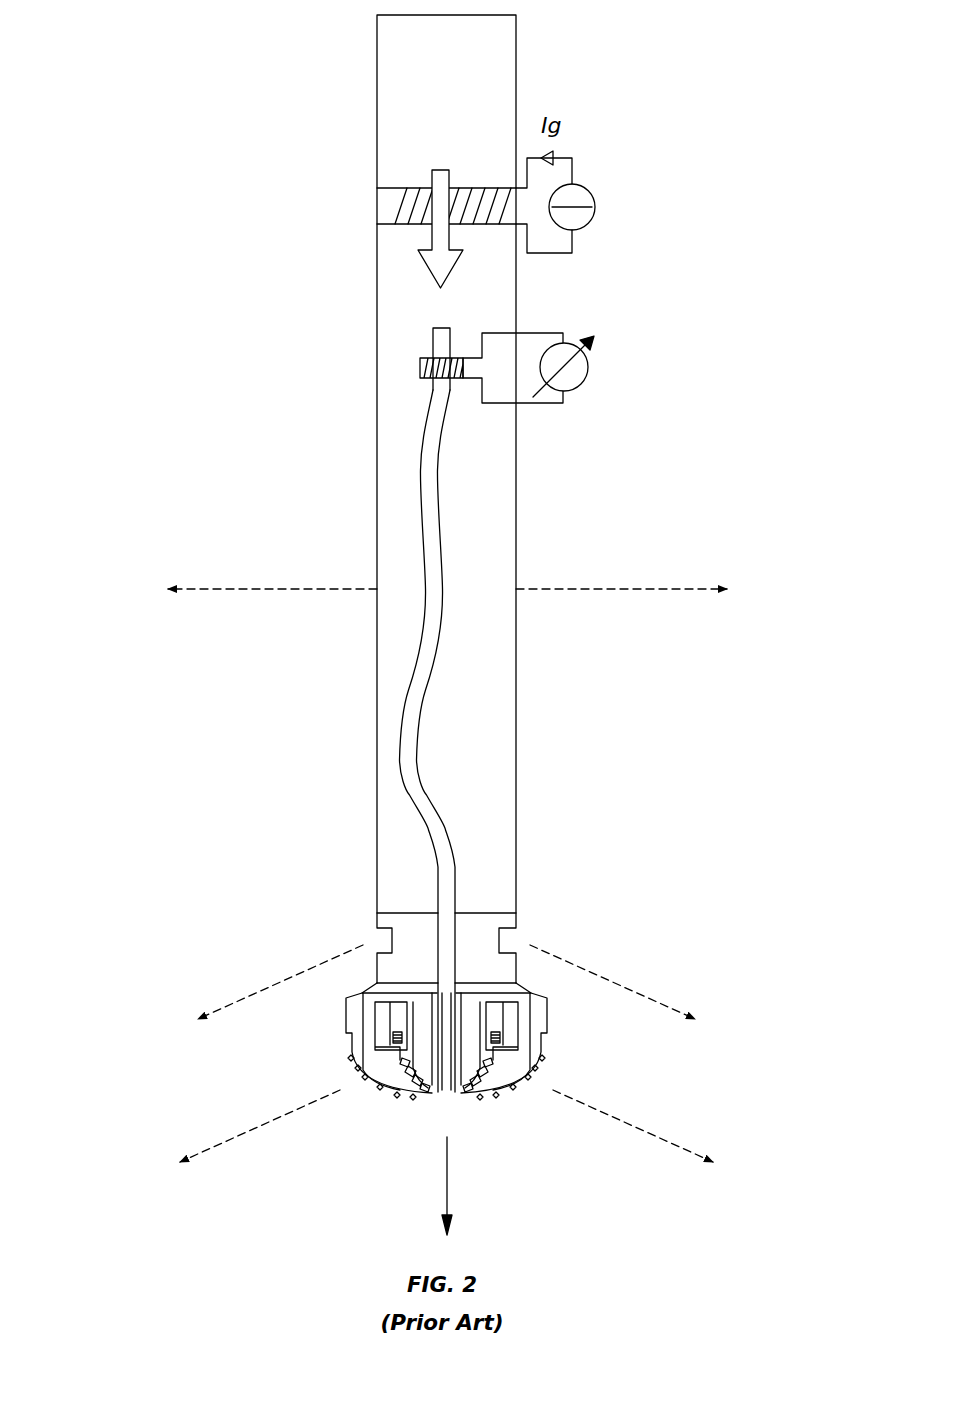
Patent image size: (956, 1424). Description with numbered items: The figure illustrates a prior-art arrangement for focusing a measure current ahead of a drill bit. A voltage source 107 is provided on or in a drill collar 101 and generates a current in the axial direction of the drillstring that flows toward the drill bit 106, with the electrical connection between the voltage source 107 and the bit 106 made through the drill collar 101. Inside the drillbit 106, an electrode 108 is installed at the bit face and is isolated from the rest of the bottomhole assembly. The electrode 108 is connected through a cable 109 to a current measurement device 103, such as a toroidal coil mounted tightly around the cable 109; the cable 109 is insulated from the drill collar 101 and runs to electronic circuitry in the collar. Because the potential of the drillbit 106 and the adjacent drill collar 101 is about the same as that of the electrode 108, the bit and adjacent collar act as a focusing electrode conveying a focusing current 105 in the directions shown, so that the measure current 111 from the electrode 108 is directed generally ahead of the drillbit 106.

The drill collar 101 is at (377, 60).
The current measurement device 103 is at (578, 389).
The focusing current 105 is at (449, 879).
The drill bit 106 is at (522, 1018).
The voltage source 107 is at (386, 207).
The electrode 108 is at (450, 1094).
The cable 109 is at (438, 498).
The measure current 111 is at (446, 1208).